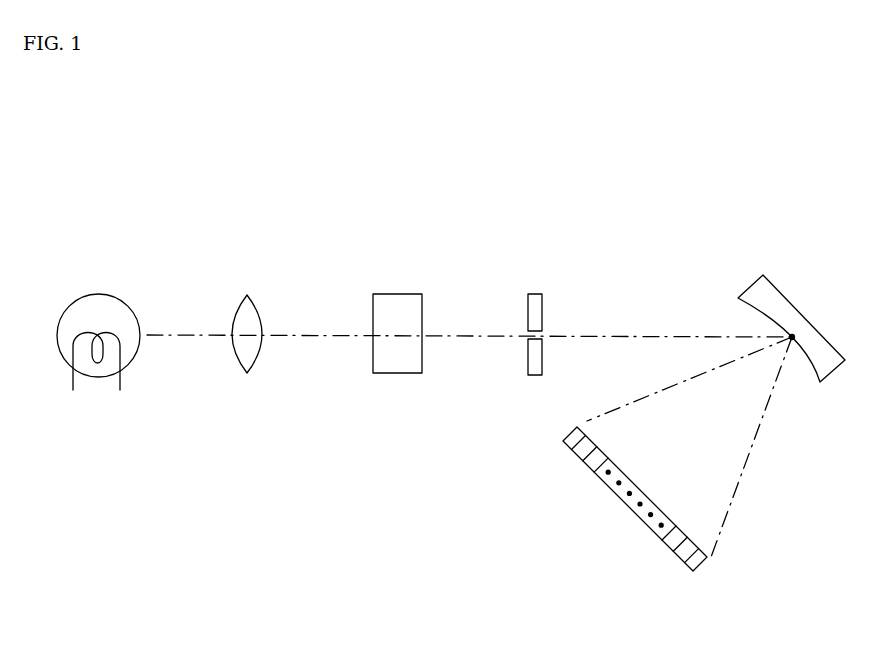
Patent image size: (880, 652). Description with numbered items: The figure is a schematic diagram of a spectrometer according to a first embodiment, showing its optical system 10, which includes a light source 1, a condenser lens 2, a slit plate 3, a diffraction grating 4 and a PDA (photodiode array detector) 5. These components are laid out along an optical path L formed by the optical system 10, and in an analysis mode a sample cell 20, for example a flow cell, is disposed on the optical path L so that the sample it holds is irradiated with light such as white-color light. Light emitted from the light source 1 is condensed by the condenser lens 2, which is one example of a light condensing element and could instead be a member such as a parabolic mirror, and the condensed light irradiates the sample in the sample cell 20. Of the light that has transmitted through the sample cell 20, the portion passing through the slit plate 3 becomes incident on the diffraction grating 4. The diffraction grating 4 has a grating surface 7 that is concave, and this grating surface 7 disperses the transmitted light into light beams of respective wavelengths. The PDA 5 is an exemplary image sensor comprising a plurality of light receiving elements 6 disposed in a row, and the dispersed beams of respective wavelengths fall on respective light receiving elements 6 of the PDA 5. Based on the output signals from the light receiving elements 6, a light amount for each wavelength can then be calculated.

The light source 1 is at (102, 295).
The condenser lens 2 is at (247, 297).
The slit plate 3 is at (540, 294).
The diffraction grating 4 is at (787, 297).
The PDA (photodiode array detector) 5 is at (606, 502).
The light receiving elements 6 is at (690, 568).
The grating surface 7 is at (758, 306).
The optical system 10 is at (665, 207).
The sample cell 20 is at (392, 373).
The optical path L is at (188, 335).